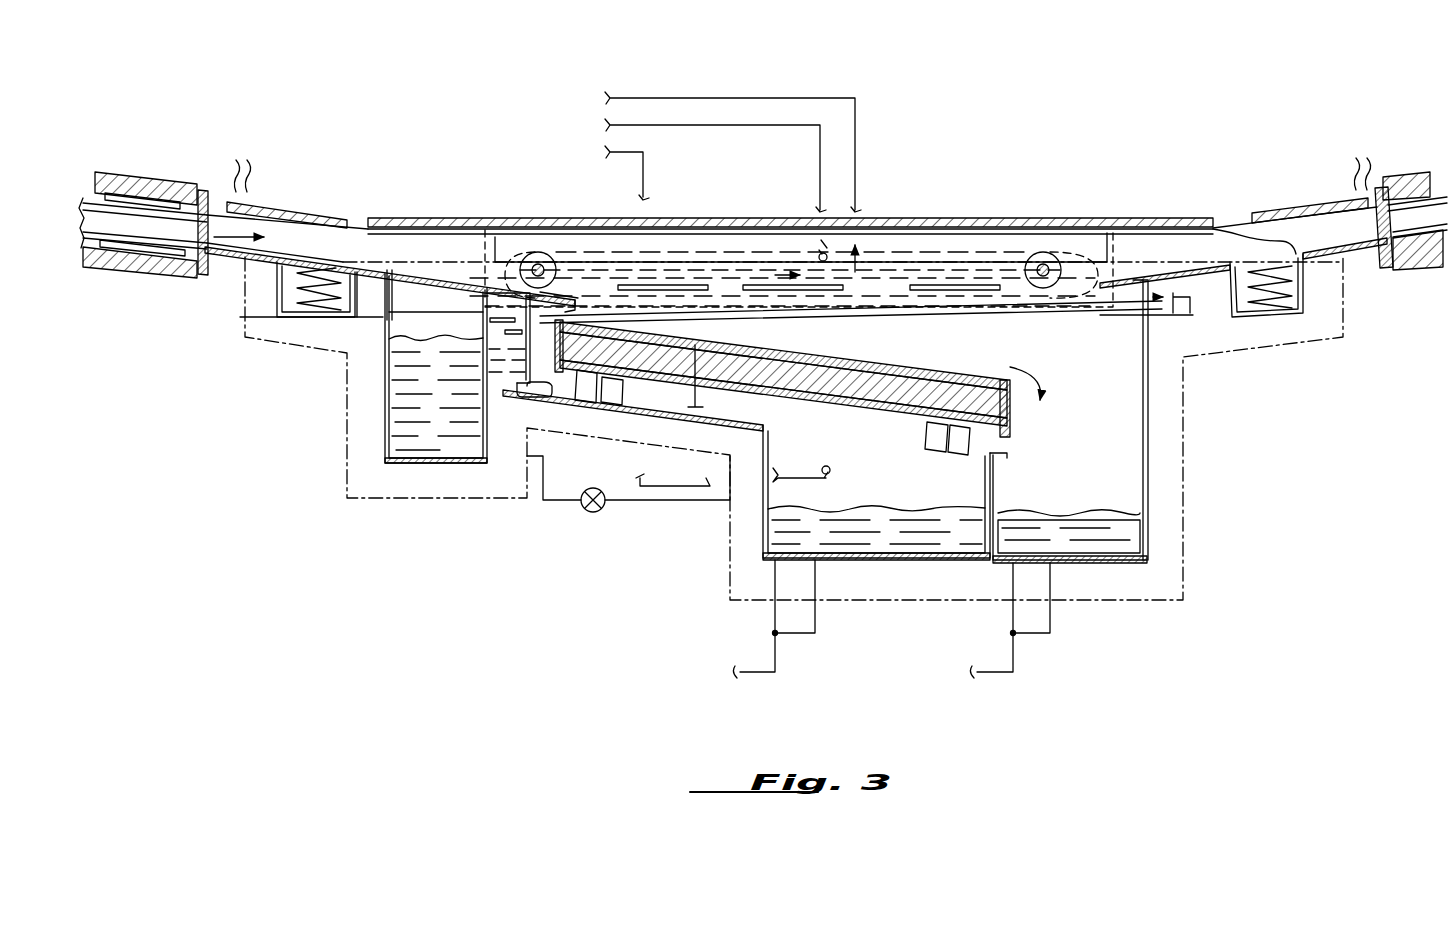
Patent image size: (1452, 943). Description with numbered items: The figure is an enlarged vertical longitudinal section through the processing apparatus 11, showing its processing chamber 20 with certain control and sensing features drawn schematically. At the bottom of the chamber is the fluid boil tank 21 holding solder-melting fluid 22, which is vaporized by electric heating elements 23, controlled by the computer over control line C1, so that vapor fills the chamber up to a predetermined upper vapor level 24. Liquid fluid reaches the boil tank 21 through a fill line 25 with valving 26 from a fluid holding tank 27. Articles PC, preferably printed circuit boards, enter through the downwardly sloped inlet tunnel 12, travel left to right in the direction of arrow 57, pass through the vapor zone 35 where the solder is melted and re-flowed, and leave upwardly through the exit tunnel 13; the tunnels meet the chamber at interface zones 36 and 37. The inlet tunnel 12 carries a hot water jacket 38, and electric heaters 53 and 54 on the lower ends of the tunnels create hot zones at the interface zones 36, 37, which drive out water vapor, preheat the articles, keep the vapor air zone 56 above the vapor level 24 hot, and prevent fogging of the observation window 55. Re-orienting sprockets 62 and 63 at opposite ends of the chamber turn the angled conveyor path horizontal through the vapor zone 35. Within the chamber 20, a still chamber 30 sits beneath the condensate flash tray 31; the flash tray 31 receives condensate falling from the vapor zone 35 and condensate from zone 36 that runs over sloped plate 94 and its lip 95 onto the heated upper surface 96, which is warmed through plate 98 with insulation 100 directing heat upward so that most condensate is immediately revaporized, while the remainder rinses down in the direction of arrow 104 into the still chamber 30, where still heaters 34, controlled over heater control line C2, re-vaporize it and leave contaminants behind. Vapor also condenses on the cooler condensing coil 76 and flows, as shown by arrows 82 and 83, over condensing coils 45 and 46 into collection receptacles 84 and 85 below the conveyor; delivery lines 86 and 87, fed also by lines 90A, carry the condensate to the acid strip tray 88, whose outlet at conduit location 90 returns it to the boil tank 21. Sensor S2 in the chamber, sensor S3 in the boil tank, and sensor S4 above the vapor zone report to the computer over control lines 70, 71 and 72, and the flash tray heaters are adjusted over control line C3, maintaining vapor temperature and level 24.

The processing apparatus 11 is at (912, 214).
The inlet tunnel 12 is at (120, 186).
The exit tunnel 13 is at (1243, 217).
The processing chamber 20 is at (942, 350).
The fluid boil tank 21 is at (932, 492).
The solder-melting fluid 22 is at (836, 566).
The electric heating elements 23 is at (936, 566).
The upper vapor level 24 is at (438, 262).
The fill line 25 is at (650, 502).
The valving 26 is at (586, 508).
The fluid fill or holding tank 27 is at (448, 430).
The still chamber 30 is at (1085, 478).
The condensate flash tray 31 is at (858, 364).
The still heaters 34 is at (1130, 566).
The vapor zone 35 is at (680, 276).
The interface zone 36 is at (296, 244).
The interface zone 37 is at (1276, 232).
The hot water jacket 38 is at (165, 174).
The condensing coil 45 is at (297, 286).
The condensing coil 46 is at (1300, 318).
The electric heater 53 is at (272, 201).
The electric heater 54 is at (1330, 206).
The observation window 55 is at (580, 219).
The vapor air zone 56 is at (972, 245).
The arrow 57 is at (222, 249).
The re-orienting sprocket 62 is at (538, 252).
The re-orienting sprocket 63 is at (1046, 264).
The control line 70 is at (738, 126).
The control line 71 is at (648, 178).
The control line 72 is at (760, 98).
The condensing coil 76 is at (1120, 262).
The arrow 82 is at (264, 268).
The arrow 83 is at (1242, 246).
The collection receptacle 84 is at (322, 296).
The collection receptacle 85 is at (1258, 330).
The delivery line 86 is at (373, 320).
The delivery line 87 is at (1106, 316).
The acid strip tray 88 is at (505, 372).
The conduit location 90 is at (540, 394).
The lines 90A is at (1198, 300).
The sloped plate 94 is at (400, 268).
The lip 95 is at (573, 290).
The upper surface 96 is at (940, 380).
The plate 98 is at (890, 398).
The insulation 100 is at (832, 392).
The arrow 104 is at (1045, 392).
The control line C1 is at (760, 674).
The heater control line C2 is at (995, 674).
The control line C3 is at (703, 408).
The sensor S2 is at (821, 252).
The sensor S3 is at (832, 472).
The sensor S4 is at (860, 270).
The articles PC is at (712, 286).